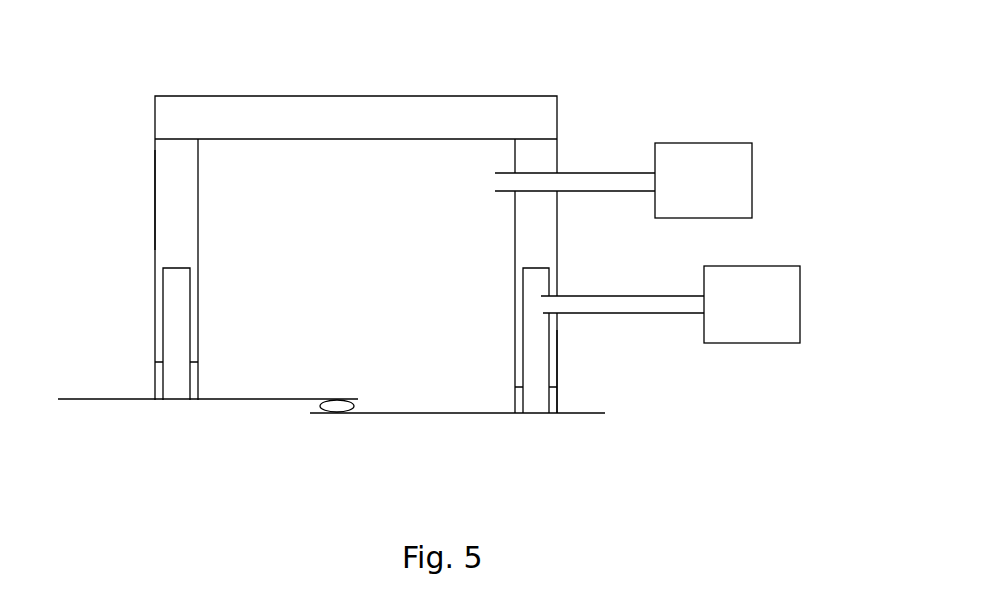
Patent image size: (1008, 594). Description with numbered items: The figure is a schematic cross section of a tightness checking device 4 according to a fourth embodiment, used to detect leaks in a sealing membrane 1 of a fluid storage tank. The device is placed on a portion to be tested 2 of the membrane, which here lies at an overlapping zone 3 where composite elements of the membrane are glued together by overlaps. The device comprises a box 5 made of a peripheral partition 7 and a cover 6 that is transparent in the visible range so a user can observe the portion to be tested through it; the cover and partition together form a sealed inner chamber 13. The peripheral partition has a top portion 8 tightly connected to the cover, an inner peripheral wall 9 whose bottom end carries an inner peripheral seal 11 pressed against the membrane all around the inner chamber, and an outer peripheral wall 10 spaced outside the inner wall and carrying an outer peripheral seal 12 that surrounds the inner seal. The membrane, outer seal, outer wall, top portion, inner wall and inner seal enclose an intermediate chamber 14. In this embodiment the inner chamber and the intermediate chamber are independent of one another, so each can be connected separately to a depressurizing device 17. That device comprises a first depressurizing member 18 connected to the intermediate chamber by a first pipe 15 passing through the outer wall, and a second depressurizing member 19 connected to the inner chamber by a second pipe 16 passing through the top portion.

The sealing membrane 1 is at (110, 404).
The portion to be tested 2 is at (250, 400).
The overlapping zone 3 is at (337, 408).
The tightness checking device 4 is at (592, 85).
The box 5 is at (137, 117).
The cover 6 is at (227, 118).
The peripheral partition 7 is at (160, 210).
The top portion 8 is at (172, 178).
The inner peripheral wall 9 is at (190, 310).
The outer peripheral wall 10 is at (158, 295).
The inner peripheral seal 11 is at (517, 413).
The outer peripheral seal 12 is at (558, 413).
The inner chamber 13 is at (355, 305).
The intermediate chamber 14 is at (173, 362).
The first pipe 15 is at (655, 318).
The second pipe 16 is at (612, 173).
The depressurizing device 17 is at (762, 138).
The first depressurizing member 18 is at (775, 265).
The second depressurizing member 19 is at (715, 143).